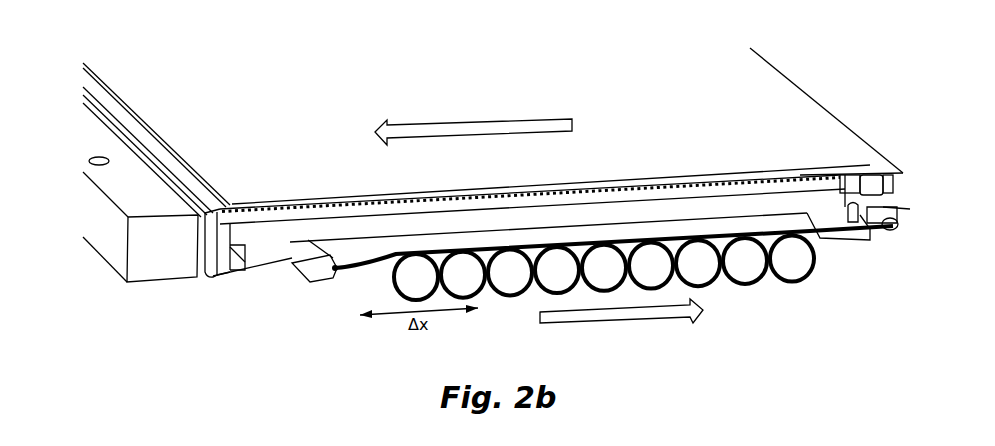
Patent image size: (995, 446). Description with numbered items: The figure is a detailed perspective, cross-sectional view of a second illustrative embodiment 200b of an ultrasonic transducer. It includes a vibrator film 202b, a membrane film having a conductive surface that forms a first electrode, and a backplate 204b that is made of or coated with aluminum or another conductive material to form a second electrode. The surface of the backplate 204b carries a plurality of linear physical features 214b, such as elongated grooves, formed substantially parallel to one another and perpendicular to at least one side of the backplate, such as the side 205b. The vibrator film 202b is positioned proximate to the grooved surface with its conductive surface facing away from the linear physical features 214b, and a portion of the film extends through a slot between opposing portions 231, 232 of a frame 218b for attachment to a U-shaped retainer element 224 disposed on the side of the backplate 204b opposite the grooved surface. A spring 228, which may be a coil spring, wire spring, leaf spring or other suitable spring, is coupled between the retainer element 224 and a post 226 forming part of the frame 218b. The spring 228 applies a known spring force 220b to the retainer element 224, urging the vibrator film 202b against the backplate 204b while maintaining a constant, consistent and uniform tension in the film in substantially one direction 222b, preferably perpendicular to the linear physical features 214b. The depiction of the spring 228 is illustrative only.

The second illustrative embodiment of the ultrasonic transducer 200b is at (160, 18).
The vibrator film 202b is at (484, 98).
The direction of tension 222b is at (503, 135).
The side of the backplate 205b is at (748, 198).
The linear physical features 214b is at (822, 188).
The post 226 is at (894, 227).
The portion of the frame 231 is at (181, 262).
The portion of the frame 232 is at (218, 258).
The frame 218b is at (148, 298).
The backplate 204b is at (268, 220).
The U-shaped retainer element 224 is at (333, 279).
The spring force 220b is at (642, 322).
The spring 228 is at (754, 302).